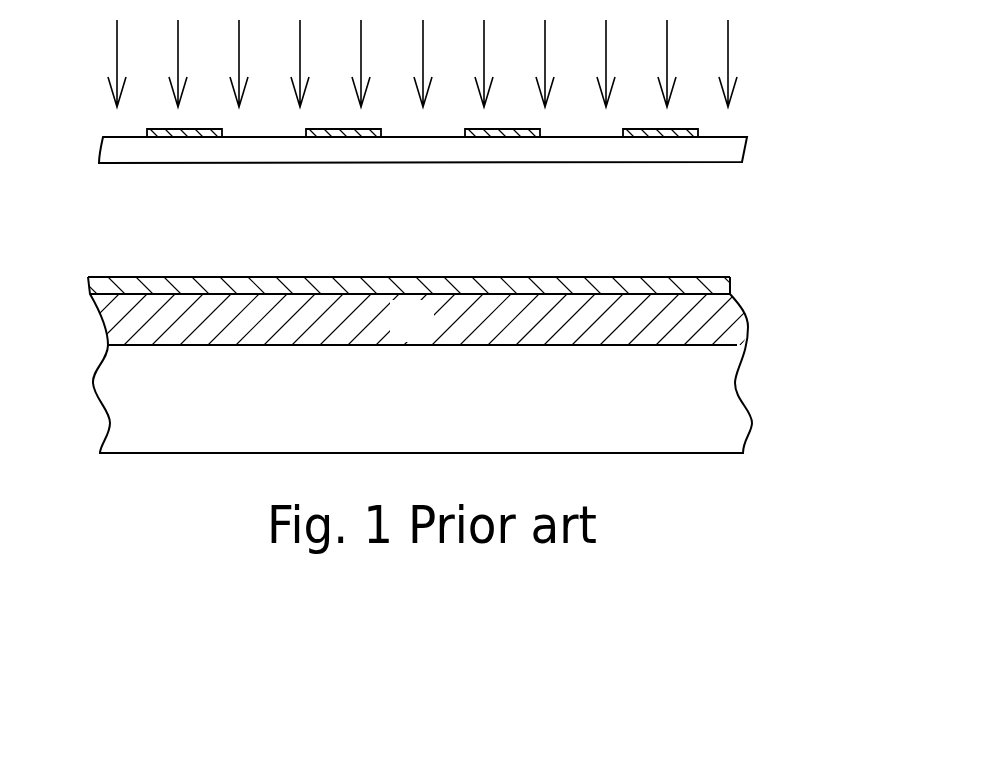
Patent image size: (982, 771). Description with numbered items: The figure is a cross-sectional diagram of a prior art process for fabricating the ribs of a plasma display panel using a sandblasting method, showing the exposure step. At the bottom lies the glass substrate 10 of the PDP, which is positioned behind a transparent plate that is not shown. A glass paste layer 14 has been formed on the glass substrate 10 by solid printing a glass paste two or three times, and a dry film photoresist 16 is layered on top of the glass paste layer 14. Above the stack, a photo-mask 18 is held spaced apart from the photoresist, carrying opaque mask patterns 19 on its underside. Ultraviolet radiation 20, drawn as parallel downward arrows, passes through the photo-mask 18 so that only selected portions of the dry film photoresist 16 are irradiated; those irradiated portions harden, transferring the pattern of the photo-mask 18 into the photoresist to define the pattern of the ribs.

The glass substrate 10 is at (429, 414).
The glass paste layer 14 is at (429, 336).
The dry film photoresist 16 is at (730, 292).
The photo-mask 18 is at (715, 147).
The opaque mask patterns 19 is at (700, 132).
The ultraviolet radiation 20 is at (422, 63).